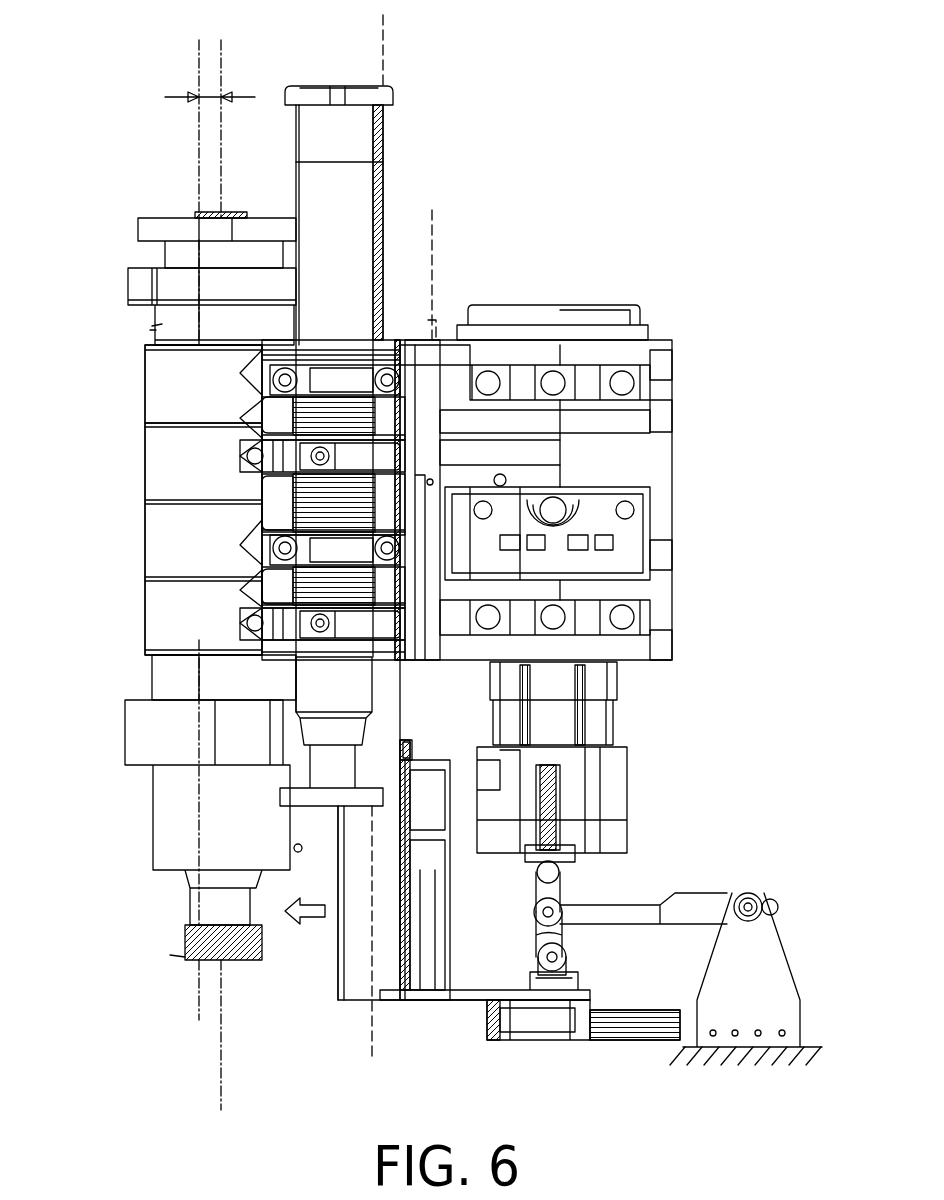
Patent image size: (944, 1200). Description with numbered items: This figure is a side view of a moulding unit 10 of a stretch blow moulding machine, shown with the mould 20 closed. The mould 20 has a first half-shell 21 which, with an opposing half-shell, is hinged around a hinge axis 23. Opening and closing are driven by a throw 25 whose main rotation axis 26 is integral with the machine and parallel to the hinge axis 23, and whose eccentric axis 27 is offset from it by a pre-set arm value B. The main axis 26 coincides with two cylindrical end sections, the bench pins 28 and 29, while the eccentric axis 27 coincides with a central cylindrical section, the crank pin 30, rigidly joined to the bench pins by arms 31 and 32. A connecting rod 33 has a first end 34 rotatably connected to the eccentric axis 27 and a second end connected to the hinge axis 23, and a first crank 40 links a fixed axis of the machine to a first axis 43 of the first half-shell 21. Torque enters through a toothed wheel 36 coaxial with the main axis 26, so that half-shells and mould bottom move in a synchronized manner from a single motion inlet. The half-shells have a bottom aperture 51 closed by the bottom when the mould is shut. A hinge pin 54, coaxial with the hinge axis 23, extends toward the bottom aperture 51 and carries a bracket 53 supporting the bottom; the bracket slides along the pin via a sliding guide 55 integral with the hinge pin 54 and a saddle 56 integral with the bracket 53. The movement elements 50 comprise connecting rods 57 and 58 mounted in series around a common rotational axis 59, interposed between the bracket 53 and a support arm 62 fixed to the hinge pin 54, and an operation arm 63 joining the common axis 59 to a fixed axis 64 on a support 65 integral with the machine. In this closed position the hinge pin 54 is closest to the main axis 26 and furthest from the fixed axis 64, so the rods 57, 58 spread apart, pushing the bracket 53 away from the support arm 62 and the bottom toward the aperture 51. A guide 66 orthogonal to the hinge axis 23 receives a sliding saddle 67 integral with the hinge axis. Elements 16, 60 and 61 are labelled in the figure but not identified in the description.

The moulding unit 10 is at (598, 206).
The drive shaft 16 is at (160, 958).
The mould 20 is at (710, 376).
The first half-shell 21 is at (650, 546).
The hinge axis 23 is at (383, 57).
The throw 25 is at (190, 215).
The main rotation axis 26 is at (221, 62).
The eccentric axis 27 is at (199, 120).
The cylindrical end section 28 is at (232, 212).
The cylindrical end section 29 is at (205, 907).
The central cylindrical section 30 is at (145, 356).
The arm 31 is at (155, 315).
The arm 32 is at (152, 674).
The connecting rod 33 is at (155, 330).
The first end 34 is at (145, 393).
The toothed wheel 36 is at (185, 960).
The first crank 40 is at (460, 430).
The first axis 43 is at (432, 225).
The movement elements 50 is at (738, 851).
The bottom aperture 51 is at (630, 672).
The bracket 53 is at (630, 815).
The hinge pin 54 is at (355, 995).
The sliding guide 55 is at (415, 755).
The saddle 56 is at (425, 860).
The connecting rod 57 is at (537, 876).
The connecting rod 58 is at (538, 941).
The common rotational axis 59 is at (562, 910).
The pivot pin 60 is at (566, 962).
The push rod 61 is at (565, 870).
The support arm 62 is at (445, 992).
The operation arm 63 is at (693, 893).
The fixed axis 64 is at (756, 893).
The support 65 is at (780, 968).
The guide 66 is at (622, 1040).
The saddle 67 is at (592, 1010).
The arm value B is at (212, 97).